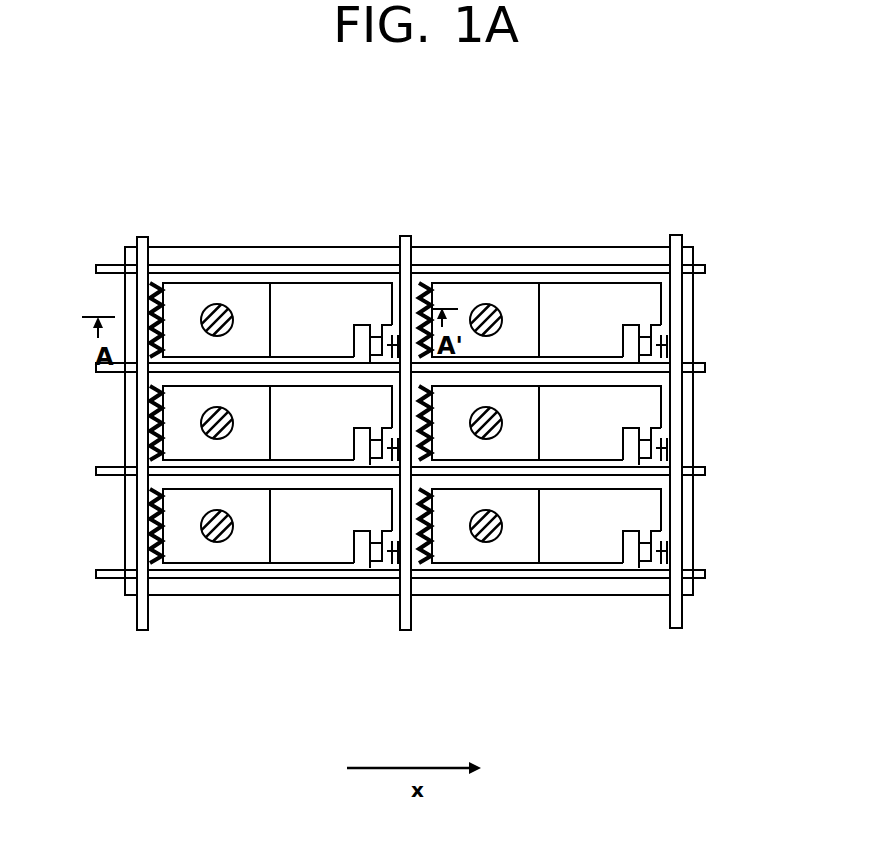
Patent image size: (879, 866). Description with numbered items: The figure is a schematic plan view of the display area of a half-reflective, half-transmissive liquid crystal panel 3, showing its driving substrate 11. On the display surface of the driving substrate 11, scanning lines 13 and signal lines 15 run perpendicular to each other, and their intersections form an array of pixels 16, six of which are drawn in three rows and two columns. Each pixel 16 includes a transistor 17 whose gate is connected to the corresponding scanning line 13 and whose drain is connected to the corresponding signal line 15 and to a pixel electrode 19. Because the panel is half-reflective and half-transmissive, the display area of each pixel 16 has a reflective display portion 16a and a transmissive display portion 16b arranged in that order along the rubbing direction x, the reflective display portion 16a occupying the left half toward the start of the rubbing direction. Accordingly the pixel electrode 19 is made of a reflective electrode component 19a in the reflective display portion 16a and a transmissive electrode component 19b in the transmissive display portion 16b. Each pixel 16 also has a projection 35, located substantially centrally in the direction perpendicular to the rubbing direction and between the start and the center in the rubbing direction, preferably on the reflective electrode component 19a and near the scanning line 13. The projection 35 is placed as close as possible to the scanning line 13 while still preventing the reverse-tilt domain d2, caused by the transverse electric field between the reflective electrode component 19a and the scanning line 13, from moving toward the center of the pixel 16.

The liquid crystal panel 3 is at (442, 383).
The driving substrate 11 is at (697, 595).
The scanning line 13 is at (137, 242).
The signal line 15 is at (705, 364).
The pixel 16 is at (412, 330).
The reflective display portion 16a is at (186, 298).
The transmissive display portion 16b is at (465, 353).
The transistor 17 is at (367, 558).
The pixel electrode 19 is at (363, 409).
The reflective electrode component 19a is at (326, 476).
The transmissive electrode component 19b is at (312, 563).
The projection 35 is at (208, 540).
The reverse-tilt domain d2 is at (150, 302).